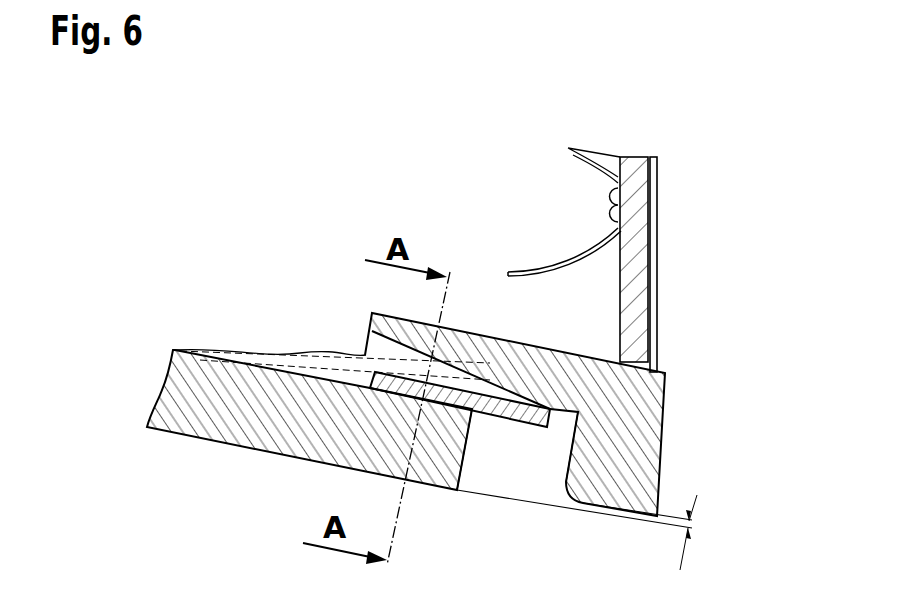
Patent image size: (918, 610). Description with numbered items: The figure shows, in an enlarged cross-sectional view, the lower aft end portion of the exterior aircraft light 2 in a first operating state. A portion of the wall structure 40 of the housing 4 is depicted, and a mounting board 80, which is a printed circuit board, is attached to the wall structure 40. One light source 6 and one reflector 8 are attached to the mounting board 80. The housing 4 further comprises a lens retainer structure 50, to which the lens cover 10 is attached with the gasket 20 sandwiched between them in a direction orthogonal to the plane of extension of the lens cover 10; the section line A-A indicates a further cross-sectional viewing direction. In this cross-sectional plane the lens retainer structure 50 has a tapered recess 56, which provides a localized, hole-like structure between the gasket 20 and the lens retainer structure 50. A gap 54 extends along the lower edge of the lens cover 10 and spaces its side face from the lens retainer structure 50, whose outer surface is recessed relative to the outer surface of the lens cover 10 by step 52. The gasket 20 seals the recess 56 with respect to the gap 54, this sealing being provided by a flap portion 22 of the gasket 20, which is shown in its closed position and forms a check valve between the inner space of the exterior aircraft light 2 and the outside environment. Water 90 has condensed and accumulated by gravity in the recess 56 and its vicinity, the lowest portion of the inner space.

The exterior aircraft light 2 is at (302, 160).
The housing 4 is at (792, 160).
The light source 6 is at (606, 200).
The reflector 8 is at (516, 268).
The lens cover 10 is at (188, 422).
The gasket 20 is at (460, 393).
The flap portion 22 is at (512, 413).
The wall structure 40 is at (657, 180).
The lens retainer structure 50 is at (648, 405).
The step 52 is at (692, 535).
The gap 54 is at (547, 482).
The tapered recess 56 is at (368, 343).
The mounting board 80 is at (642, 262).
The water 90 is at (292, 362).